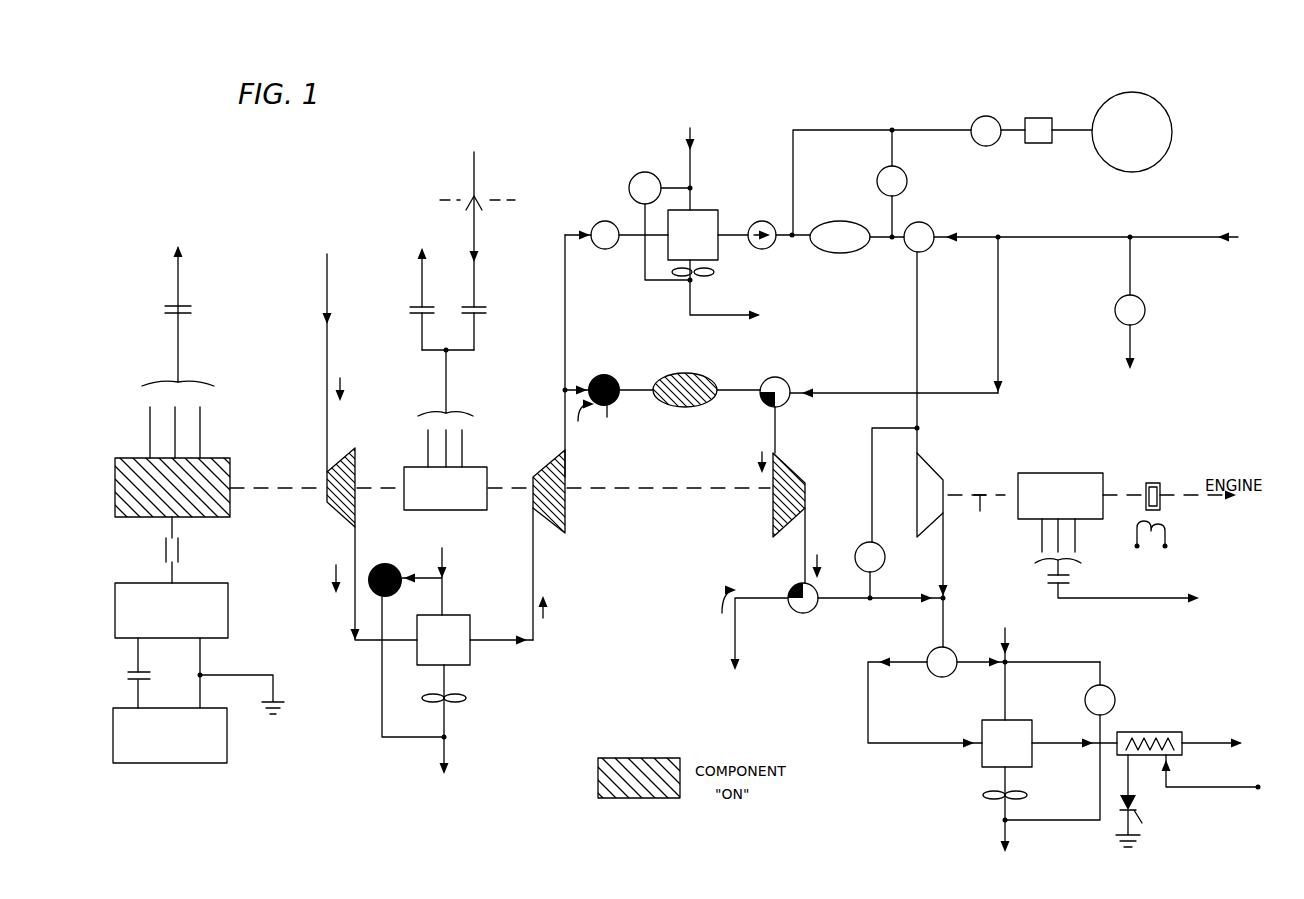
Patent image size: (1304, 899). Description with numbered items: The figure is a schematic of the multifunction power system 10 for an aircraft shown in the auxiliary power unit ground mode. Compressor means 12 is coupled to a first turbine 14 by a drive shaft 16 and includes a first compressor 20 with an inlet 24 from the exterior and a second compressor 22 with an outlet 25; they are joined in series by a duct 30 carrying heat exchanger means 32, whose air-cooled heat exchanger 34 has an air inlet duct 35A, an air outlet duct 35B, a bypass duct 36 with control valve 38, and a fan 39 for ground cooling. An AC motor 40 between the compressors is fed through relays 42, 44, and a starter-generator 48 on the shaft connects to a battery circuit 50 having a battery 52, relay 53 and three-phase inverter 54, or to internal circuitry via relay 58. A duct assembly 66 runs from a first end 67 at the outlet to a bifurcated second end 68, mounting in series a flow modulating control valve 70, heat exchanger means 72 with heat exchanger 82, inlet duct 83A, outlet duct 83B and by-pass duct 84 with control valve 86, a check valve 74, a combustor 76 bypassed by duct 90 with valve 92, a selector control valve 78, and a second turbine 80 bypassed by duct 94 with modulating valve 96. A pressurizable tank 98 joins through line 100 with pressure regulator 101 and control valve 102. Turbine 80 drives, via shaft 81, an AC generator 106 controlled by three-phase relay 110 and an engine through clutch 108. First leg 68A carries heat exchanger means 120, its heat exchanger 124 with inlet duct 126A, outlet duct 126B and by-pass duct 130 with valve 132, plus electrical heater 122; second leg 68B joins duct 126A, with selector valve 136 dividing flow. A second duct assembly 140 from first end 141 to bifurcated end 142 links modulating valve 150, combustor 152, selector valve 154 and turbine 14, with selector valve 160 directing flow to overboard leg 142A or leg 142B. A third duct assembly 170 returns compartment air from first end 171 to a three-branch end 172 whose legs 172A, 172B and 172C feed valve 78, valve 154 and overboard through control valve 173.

The multifunction power system 10 is at (356, 754).
The compressor means 12 is at (550, 558).
The first turbine 14 is at (770, 531).
The drive shaft 16 is at (619, 490).
The first compressor 20 is at (340, 518).
The second compressor 22 is at (570, 479).
The inlet 24 is at (326, 412).
The outlet 25 is at (563, 422).
The duct 30 is at (352, 617).
The heat exchanger means 32 is at (481, 608).
The air-cooled heat exchanger 34 is at (443, 640).
The air inlet duct 35A is at (446, 562).
The air outlet duct 35B is at (448, 750).
The bypass duct 36 is at (382, 720).
The control valve 38 is at (392, 554).
The fan 39 is at (468, 698).
The AC motor 40 is at (445, 430).
The relay 42 is at (410, 308).
The relay 44 is at (479, 307).
The starter-generator 48 is at (232, 463).
The battery circuit 50 is at (108, 708).
The battery 52 is at (170, 735).
The relay 53 is at (130, 674).
The three-phase inverter 54 is at (171, 610).
The relay 58 is at (165, 309).
The duct assembly 66 is at (630, 226).
The first end 67 is at (565, 342).
The bifurcated second end 68 is at (946, 608).
The first leg 68A is at (868, 735).
The second leg 68B is at (925, 703).
The flow modulating control valve 70 is at (593, 226).
The heat exchanger means 72 is at (727, 194).
The check valve 74 is at (771, 210).
The combustor 76 is at (840, 222).
The selector control valve 78 is at (935, 227).
The second turbine 80 is at (934, 474).
The shaft 81 is at (975, 521).
The air-cooled heat exchanger 82 is at (693, 245).
The cooling air inlet duct 83A is at (697, 163).
The cooling air outlet duct 83B is at (686, 318).
The by-pass duct 84 is at (652, 283).
The control valve 86 is at (655, 161).
The by-pass duct 90 is at (838, 129).
The control valve 92 is at (904, 177).
The by-pass duct 94 is at (872, 440).
The modulating control valve 96 is at (858, 549).
The pressurizable tank 98 is at (1132, 132).
The line 100 is at (916, 113).
The pressure regulator 101 is at (1041, 113).
The control valve 102 is at (980, 110).
The AC generator 106 is at (1060, 524).
The clutch 108 is at (1152, 483).
The three-phase relay 110 is at (1048, 582).
The heat exchanger means 120 is at (978, 769).
The electrical heater 122 is at (1156, 719).
The outside air-cooled heat exchanger 124 is at (1009, 743).
The inlet duct 126A is at (1007, 708).
The outlet duct 126B is at (1000, 835).
The by-pass duct 130 is at (1106, 650).
The control valve 132 is at (1113, 690).
The selector control valve 136 is at (930, 651).
The second duct assembly 140 is at (745, 396).
The first end 141 is at (585, 383).
The bifurcated second end 142 is at (800, 571).
The leg 142A is at (735, 635).
The leg 142B is at (848, 603).
The modulating control valve 150 is at (603, 427).
The combustor 152 is at (680, 407).
The selector control valve 154 is at (790, 371).
The selector control valve 160 is at (803, 614).
The third duct assembly 170 is at (1172, 218).
The first end 171 is at (1198, 237).
The second end 172 is at (1062, 236).
The first leg 172A is at (962, 248).
The second leg 172B is at (1000, 291).
The third leg 172C is at (1132, 343).
The control valve 173 is at (1143, 305).